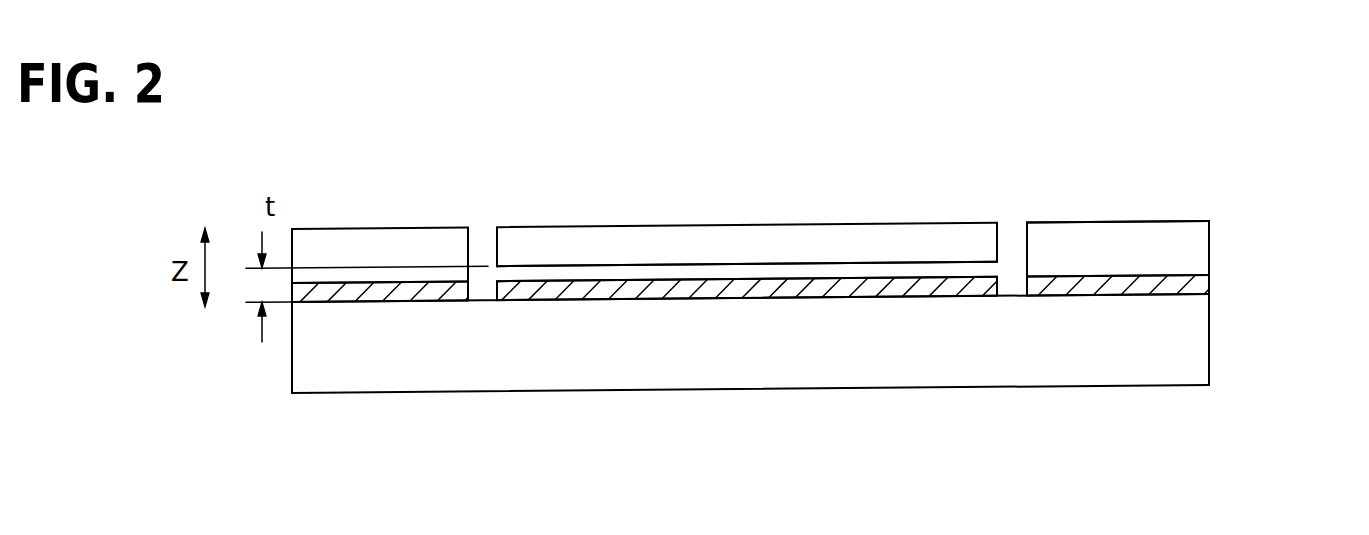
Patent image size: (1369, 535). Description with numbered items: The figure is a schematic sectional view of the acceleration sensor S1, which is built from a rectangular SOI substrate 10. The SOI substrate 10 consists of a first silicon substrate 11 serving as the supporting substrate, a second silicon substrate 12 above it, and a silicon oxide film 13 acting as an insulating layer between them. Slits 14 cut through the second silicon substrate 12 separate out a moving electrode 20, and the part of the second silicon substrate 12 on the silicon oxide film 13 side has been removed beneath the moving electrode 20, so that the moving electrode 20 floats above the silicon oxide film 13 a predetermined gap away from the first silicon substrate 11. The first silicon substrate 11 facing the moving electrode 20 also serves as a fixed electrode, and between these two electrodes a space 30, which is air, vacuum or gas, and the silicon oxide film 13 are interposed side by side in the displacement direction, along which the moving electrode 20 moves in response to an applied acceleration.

The SOI substrate 10 is at (794, 259).
The first silicon substrate 11 is at (1190, 340).
The second silicon substrate 12 is at (787, 252).
The silicon oxide film 13 is at (552, 292).
The slits 14 is at (1009, 240).
The moving electrode 20 is at (845, 243).
The space 30 is at (593, 273).
The acceleration sensor S1 is at (1182, 196).